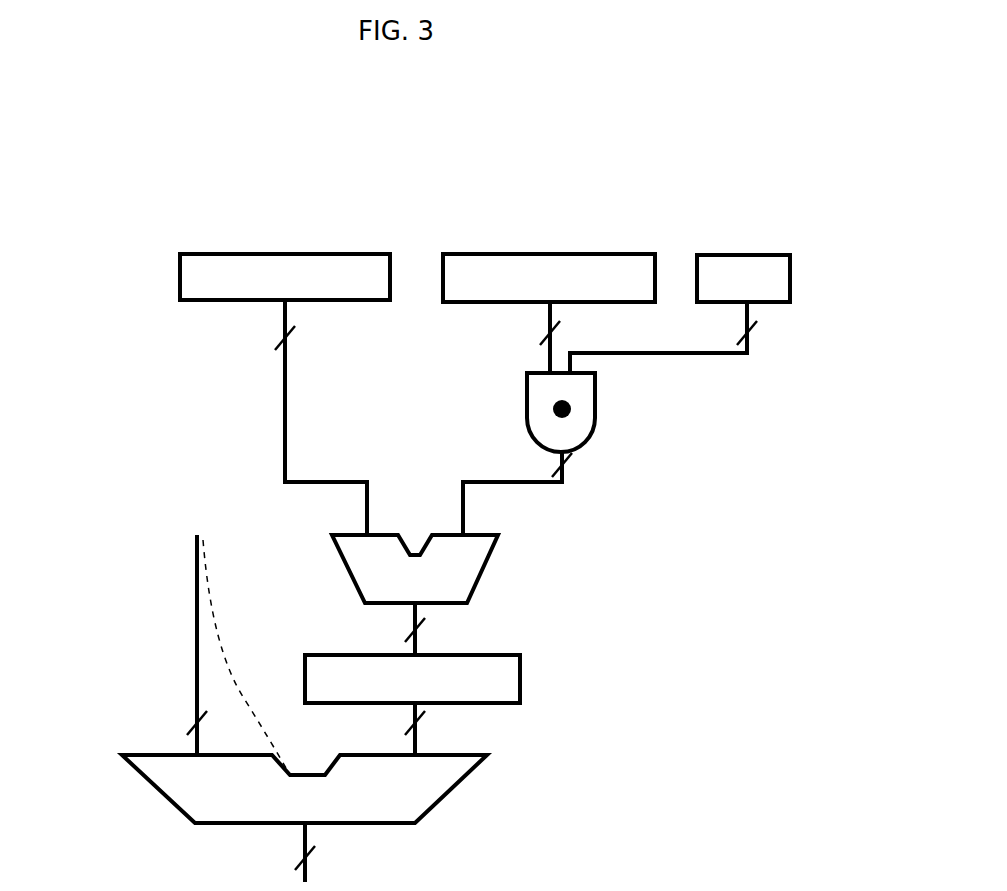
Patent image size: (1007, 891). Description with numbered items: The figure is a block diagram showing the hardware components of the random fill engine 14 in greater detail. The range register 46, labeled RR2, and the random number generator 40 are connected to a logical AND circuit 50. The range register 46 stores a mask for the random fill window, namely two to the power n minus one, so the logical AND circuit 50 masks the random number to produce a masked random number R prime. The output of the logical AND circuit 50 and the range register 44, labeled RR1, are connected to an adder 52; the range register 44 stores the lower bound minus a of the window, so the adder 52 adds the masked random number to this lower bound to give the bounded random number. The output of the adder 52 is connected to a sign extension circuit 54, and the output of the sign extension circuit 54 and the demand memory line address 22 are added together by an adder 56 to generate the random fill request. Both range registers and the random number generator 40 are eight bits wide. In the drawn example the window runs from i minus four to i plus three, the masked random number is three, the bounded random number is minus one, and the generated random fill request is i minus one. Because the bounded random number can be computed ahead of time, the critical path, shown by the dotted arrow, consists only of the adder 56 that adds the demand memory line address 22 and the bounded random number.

The random fill engine 14 is at (686, 188).
The range register 44 is at (303, 253).
The range register 46 is at (563, 253).
The random number generator 40 is at (792, 278).
The logical AND circuit 50 is at (597, 428).
The adder 52 is at (482, 575).
The sign extension circuit 54 is at (520, 683).
The adder 56 is at (453, 800).
The demand memory line address 22 is at (133, 604).